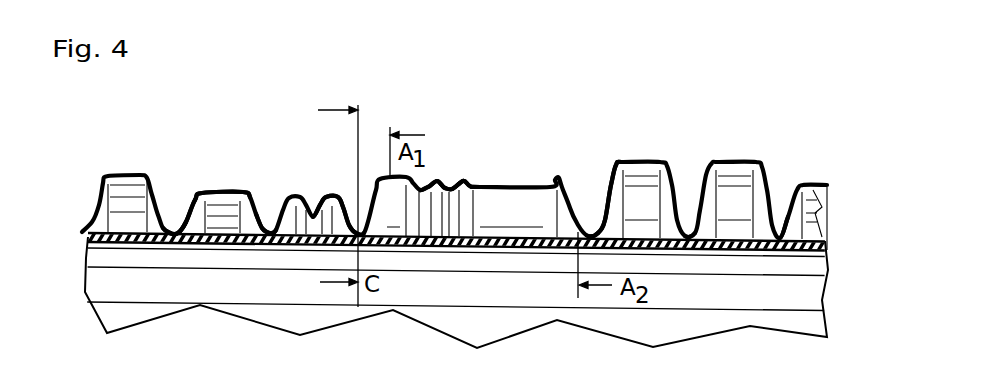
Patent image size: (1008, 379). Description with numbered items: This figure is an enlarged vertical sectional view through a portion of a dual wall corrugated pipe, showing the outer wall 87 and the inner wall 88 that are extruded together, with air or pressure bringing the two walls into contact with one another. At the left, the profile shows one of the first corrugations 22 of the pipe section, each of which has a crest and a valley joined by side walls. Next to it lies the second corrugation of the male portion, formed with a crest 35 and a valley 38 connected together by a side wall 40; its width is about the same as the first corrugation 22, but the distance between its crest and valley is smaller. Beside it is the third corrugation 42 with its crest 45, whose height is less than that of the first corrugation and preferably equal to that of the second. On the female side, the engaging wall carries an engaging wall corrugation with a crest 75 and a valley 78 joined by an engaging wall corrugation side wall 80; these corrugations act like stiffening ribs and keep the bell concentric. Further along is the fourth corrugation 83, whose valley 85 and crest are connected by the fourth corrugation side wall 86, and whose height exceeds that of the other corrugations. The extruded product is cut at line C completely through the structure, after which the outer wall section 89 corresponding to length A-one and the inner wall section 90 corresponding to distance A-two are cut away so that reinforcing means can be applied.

The first corrugation 22 is at (122, 168).
The valley 38 is at (169, 222).
The side wall 40 is at (174, 223).
The outer wall 87 is at (210, 166).
The crest 35 is at (220, 193).
The third corrugation 42 is at (293, 180).
The crest 45 is at (334, 196).
The outer wall section 89 is at (377, 178).
The crest 75 is at (437, 182).
The engaging wall corrugation side wall 80 is at (446, 186).
The valley 78 is at (463, 182).
The fourth corrugation side wall 86 is at (610, 178).
The fourth corrugation 83 is at (640, 144).
The valley 85 is at (780, 228).
The inner wall 88 is at (176, 278).
The inner wall section 90 is at (428, 243).